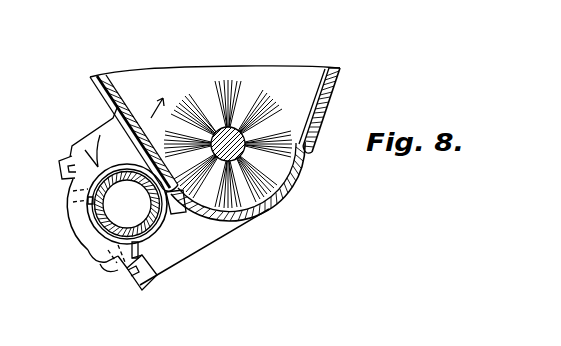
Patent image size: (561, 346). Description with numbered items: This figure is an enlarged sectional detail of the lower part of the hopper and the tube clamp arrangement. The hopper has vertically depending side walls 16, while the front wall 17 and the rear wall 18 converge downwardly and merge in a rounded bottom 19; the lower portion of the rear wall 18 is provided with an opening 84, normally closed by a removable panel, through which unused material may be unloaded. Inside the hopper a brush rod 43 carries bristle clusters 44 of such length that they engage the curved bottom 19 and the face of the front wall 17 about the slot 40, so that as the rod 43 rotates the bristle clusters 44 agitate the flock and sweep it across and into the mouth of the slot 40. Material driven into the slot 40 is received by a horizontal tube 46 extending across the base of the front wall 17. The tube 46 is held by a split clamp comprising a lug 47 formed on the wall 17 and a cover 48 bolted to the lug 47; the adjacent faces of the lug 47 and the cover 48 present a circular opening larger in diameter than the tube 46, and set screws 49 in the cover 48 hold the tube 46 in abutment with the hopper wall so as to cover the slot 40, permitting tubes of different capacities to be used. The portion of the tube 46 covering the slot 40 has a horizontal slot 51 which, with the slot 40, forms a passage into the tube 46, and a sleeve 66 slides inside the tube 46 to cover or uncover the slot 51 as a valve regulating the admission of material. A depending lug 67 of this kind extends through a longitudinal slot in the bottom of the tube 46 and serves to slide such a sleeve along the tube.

The side walls 16 is at (306, 74).
The front wall 17 is at (101, 87).
The rear wall 18 is at (324, 118).
The rounded bottom 19 is at (268, 212).
The opening 84 is at (345, 70).
The bristle clusters 44 is at (223, 84).
The brush rod 43 is at (279, 119).
The lug 47 is at (110, 138).
The depending lug 67 is at (165, 281).
The slot 40 is at (174, 213).
The tube 46 is at (87, 215).
The slot 51 is at (158, 187).
The cover 48 is at (85, 247).
The set screws 49 is at (64, 202).
The sleeve 66 is at (96, 263).